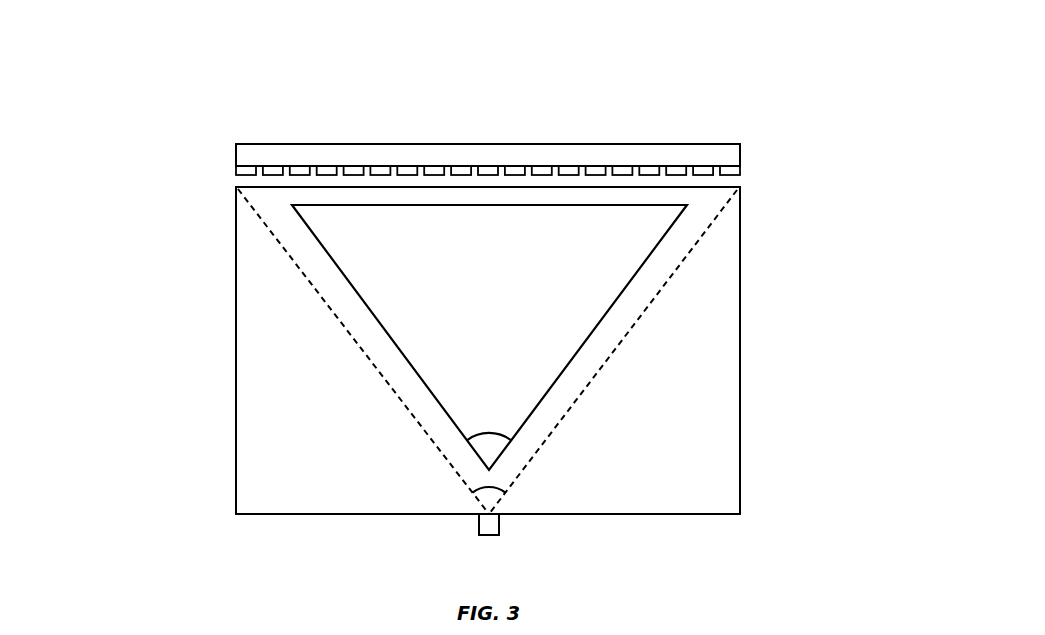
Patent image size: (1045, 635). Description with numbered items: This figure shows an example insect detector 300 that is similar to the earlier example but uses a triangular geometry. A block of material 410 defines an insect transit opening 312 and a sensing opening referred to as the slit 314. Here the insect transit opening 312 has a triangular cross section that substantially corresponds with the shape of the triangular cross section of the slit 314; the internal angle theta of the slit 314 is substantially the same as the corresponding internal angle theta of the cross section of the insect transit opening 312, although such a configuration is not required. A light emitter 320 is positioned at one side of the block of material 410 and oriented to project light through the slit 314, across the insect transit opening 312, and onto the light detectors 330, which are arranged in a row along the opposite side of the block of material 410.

The insect detector 300 is at (137, 102).
The block of material 410 is at (236, 447).
The light detectors 330 is at (740, 172).
The insect transit opening 312 is at (507, 329).
The slit 314 is at (577, 408).
The light emitter 320 is at (478, 525).